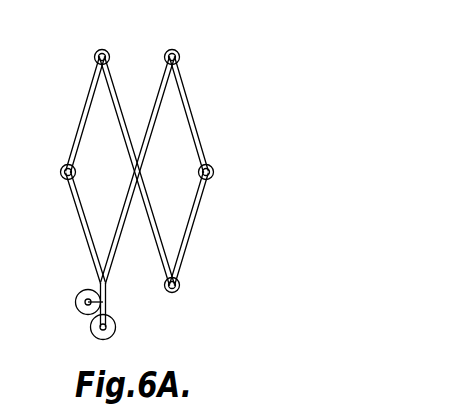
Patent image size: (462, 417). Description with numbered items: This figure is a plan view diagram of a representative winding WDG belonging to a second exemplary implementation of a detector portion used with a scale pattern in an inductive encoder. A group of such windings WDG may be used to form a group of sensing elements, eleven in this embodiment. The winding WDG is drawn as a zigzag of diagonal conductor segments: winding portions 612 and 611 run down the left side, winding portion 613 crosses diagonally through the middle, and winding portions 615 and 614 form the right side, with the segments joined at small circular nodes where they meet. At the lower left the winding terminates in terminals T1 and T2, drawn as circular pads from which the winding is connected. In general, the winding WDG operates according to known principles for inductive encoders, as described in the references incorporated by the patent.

The representative winding WDG is at (227, 189).
The winding portion 611 is at (82, 222).
The winding portion 612 is at (86, 110).
The winding portion 613 is at (118, 100).
The winding portion 614 is at (194, 220).
The winding portion 615 is at (200, 137).
The terminal T1 is at (108, 327).
The terminal T2 is at (85, 301).